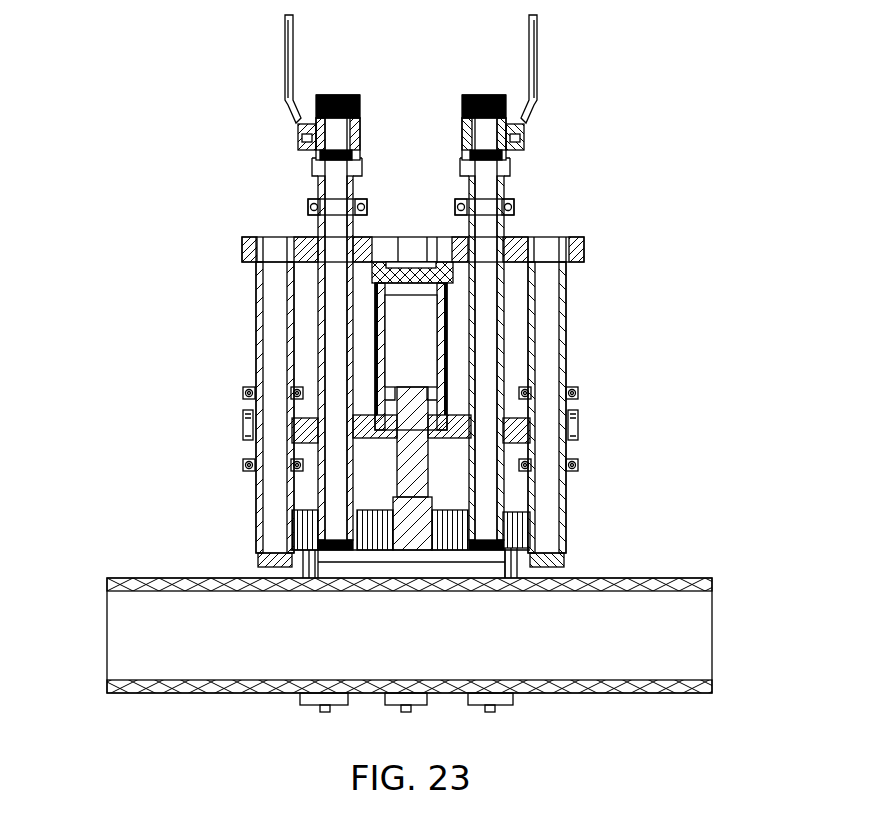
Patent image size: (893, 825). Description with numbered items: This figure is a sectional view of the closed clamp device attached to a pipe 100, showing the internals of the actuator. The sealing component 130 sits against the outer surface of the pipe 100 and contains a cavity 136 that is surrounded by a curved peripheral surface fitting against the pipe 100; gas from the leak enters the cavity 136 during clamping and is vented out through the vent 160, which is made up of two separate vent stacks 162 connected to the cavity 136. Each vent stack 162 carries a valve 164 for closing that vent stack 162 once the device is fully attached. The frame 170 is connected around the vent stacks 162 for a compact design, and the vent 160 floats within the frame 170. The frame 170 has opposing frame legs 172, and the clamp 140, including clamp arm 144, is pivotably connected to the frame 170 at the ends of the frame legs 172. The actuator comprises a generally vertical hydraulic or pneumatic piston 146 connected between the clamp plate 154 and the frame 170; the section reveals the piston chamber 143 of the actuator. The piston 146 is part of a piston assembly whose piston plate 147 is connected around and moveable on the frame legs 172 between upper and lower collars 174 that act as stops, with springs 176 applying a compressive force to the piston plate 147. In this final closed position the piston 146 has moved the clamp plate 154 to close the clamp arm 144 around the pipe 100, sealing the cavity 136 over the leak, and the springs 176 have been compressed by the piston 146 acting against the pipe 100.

The pipe 100 is at (693, 580).
The sealing component 130 is at (513, 573).
The cavity 136 is at (348, 565).
The clamp 140 is at (250, 556).
The piston chamber 143 is at (427, 345).
The clamp arm 144 is at (316, 710).
The piston 146 is at (406, 430).
The piston plate 147 is at (290, 440).
The clamp plate 154 is at (432, 527).
The vent 160 is at (256, 151).
The vent stack 162 is at (320, 225).
The valve 164 is at (472, 128).
The frame 170 is at (597, 264).
The frame leg 172 is at (258, 323).
The collar 174 is at (243, 392).
The spring 176 is at (245, 412).